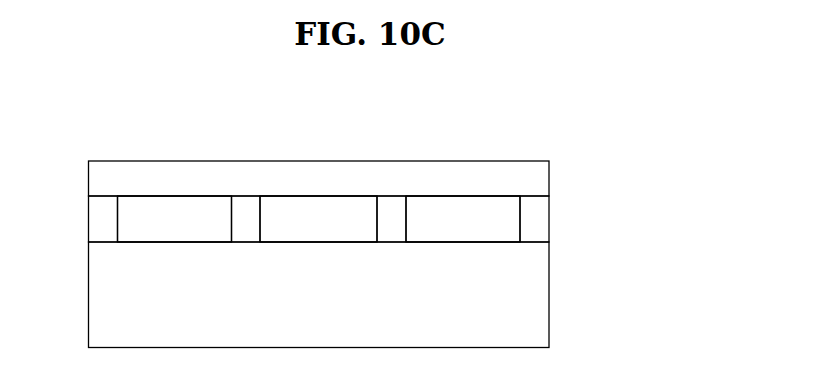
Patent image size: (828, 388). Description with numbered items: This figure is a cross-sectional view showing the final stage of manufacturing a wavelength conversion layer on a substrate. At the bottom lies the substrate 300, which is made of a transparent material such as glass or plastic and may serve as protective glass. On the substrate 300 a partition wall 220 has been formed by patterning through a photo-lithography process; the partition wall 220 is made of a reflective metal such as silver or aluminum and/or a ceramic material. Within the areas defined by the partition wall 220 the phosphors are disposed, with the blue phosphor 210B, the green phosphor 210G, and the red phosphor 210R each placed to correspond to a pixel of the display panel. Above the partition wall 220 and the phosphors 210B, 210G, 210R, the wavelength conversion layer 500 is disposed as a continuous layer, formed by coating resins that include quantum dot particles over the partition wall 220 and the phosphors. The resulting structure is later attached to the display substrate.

The wavelength conversion layer 500 is at (532, 182).
The partition wall 220 is at (537, 223).
The substrate 300 is at (527, 293).
The blue phosphor 210B is at (172, 217).
The green phosphor 210G is at (314, 215).
The red phosphor 210R is at (470, 215).